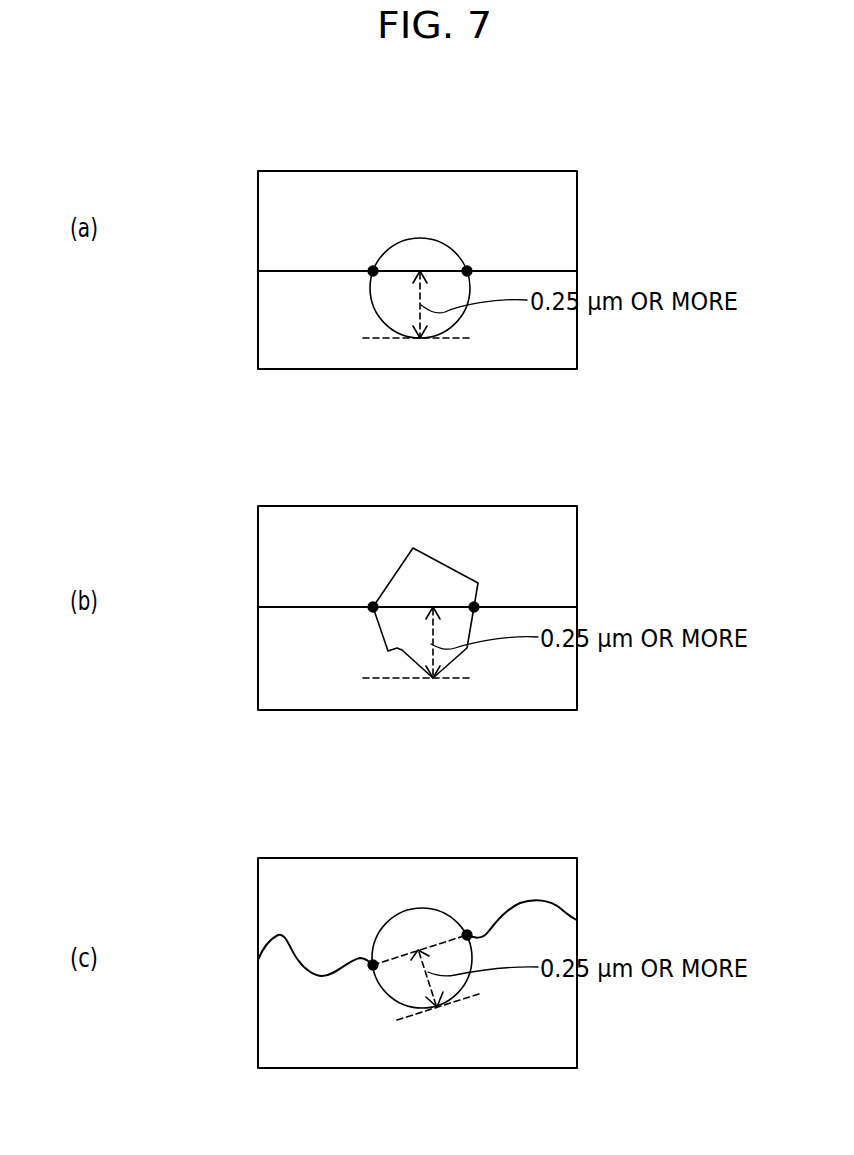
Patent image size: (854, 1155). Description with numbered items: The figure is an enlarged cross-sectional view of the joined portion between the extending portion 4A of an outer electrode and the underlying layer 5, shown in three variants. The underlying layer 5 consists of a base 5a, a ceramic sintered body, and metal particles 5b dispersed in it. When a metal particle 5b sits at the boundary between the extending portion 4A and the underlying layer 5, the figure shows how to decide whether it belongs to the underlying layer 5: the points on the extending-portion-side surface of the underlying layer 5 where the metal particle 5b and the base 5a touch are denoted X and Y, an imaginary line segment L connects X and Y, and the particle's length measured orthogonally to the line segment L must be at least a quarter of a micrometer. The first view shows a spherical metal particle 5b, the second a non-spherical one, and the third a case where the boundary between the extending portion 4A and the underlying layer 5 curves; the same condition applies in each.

The extending portion 4A is at (567, 207).
The underlying layer 5 is at (432, 122).
The base 5a is at (287, 283).
The metal particle 5b is at (412, 255).
The contact point X is at (373, 271).
The contact point Y is at (467, 271).
The imaginary line segment L is at (438, 271).